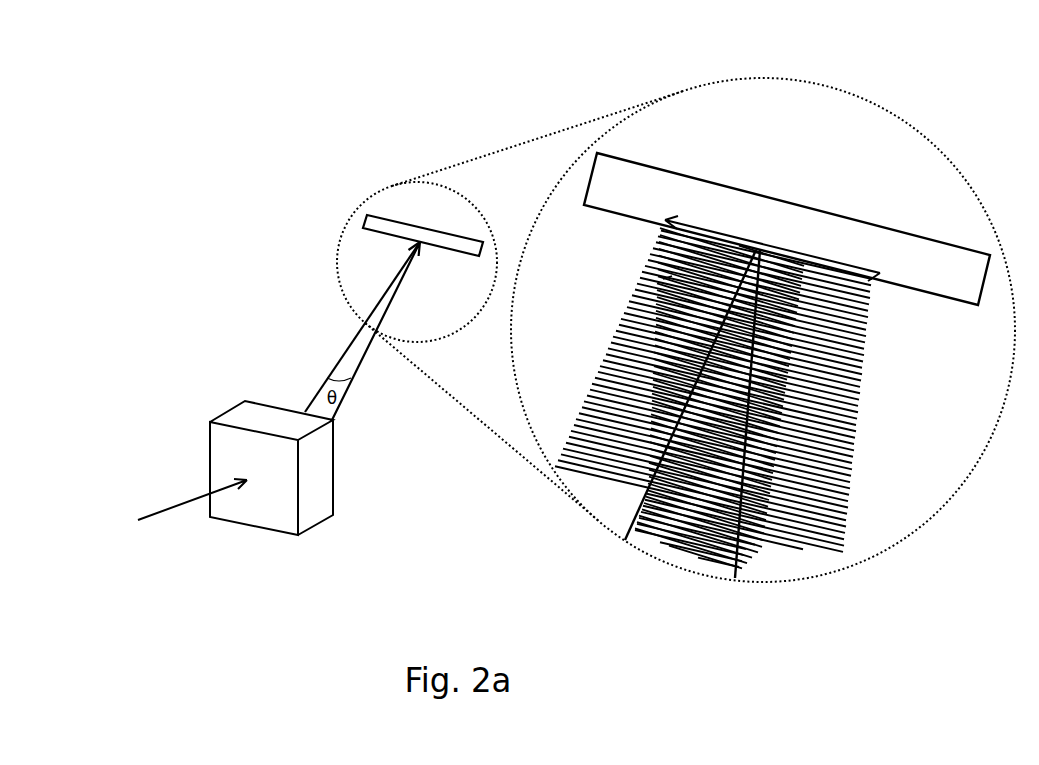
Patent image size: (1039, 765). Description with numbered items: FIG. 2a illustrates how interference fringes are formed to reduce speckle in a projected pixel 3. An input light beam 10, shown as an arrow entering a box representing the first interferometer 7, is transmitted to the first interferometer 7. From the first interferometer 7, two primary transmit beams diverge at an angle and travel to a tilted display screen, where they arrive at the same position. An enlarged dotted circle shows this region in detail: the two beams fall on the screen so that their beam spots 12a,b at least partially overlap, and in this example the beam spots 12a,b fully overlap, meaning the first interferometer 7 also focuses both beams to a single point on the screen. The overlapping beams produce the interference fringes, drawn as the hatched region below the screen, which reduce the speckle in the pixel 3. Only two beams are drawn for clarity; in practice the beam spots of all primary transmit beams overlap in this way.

The pixel 3 is at (663, 279).
The first interferometer 7 is at (210, 440).
The input light beam 10 is at (160, 515).
The beam spots 12a,b is at (765, 243).